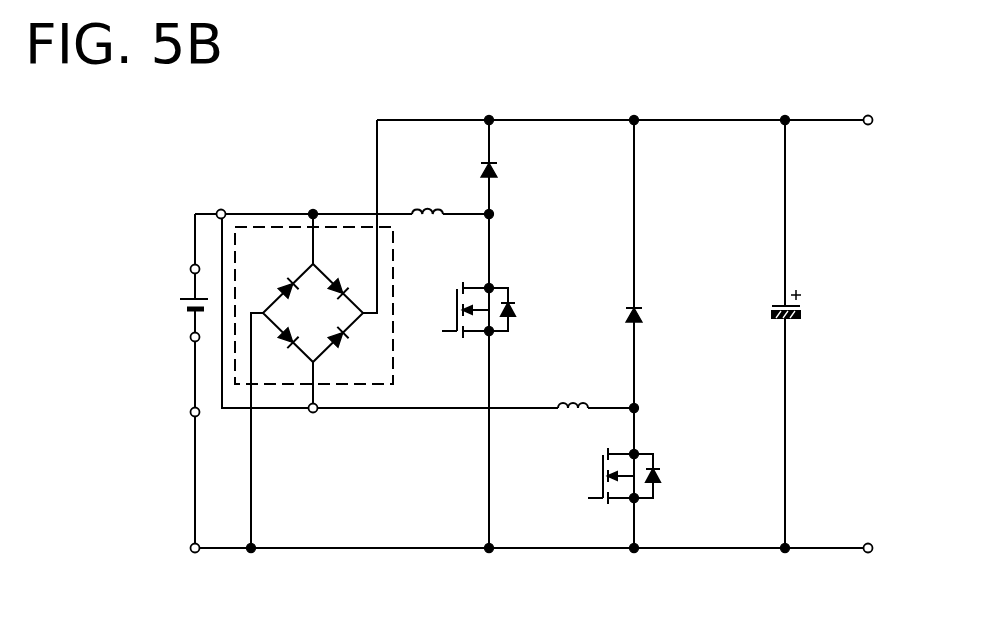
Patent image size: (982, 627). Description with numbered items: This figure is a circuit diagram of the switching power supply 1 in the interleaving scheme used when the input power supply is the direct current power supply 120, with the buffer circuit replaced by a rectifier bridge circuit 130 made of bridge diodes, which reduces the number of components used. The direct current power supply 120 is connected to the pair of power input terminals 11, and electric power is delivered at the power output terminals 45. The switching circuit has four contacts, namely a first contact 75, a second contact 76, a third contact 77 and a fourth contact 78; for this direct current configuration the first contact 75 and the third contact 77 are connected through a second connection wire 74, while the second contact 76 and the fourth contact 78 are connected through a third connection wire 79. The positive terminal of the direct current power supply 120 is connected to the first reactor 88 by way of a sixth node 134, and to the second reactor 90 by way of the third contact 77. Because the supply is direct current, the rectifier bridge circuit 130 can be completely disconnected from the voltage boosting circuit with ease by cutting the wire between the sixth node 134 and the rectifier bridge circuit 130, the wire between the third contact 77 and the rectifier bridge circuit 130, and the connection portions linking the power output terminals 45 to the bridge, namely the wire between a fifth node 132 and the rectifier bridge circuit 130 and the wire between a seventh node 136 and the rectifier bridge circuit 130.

The switching power supply 1 is at (572, 97).
The power input terminals 11 is at (194, 268).
The power output terminals 45 is at (868, 125).
The second connection wire 74 is at (272, 408).
The first contact 75 is at (221, 209).
The second contact 76 is at (192, 413).
The third contact 77 is at (314, 413).
The fourth contact 78 is at (192, 549).
The third connection wire 79 is at (194, 466).
The first reactor 88 is at (426, 198).
The second reactor 90 is at (574, 390).
The direct current power supply 120 is at (172, 299).
The rectifier bridge circuit 130 is at (357, 385).
The fifth node 132 is at (489, 116).
The sixth node 134 is at (313, 209).
The seventh node 136 is at (251, 553).